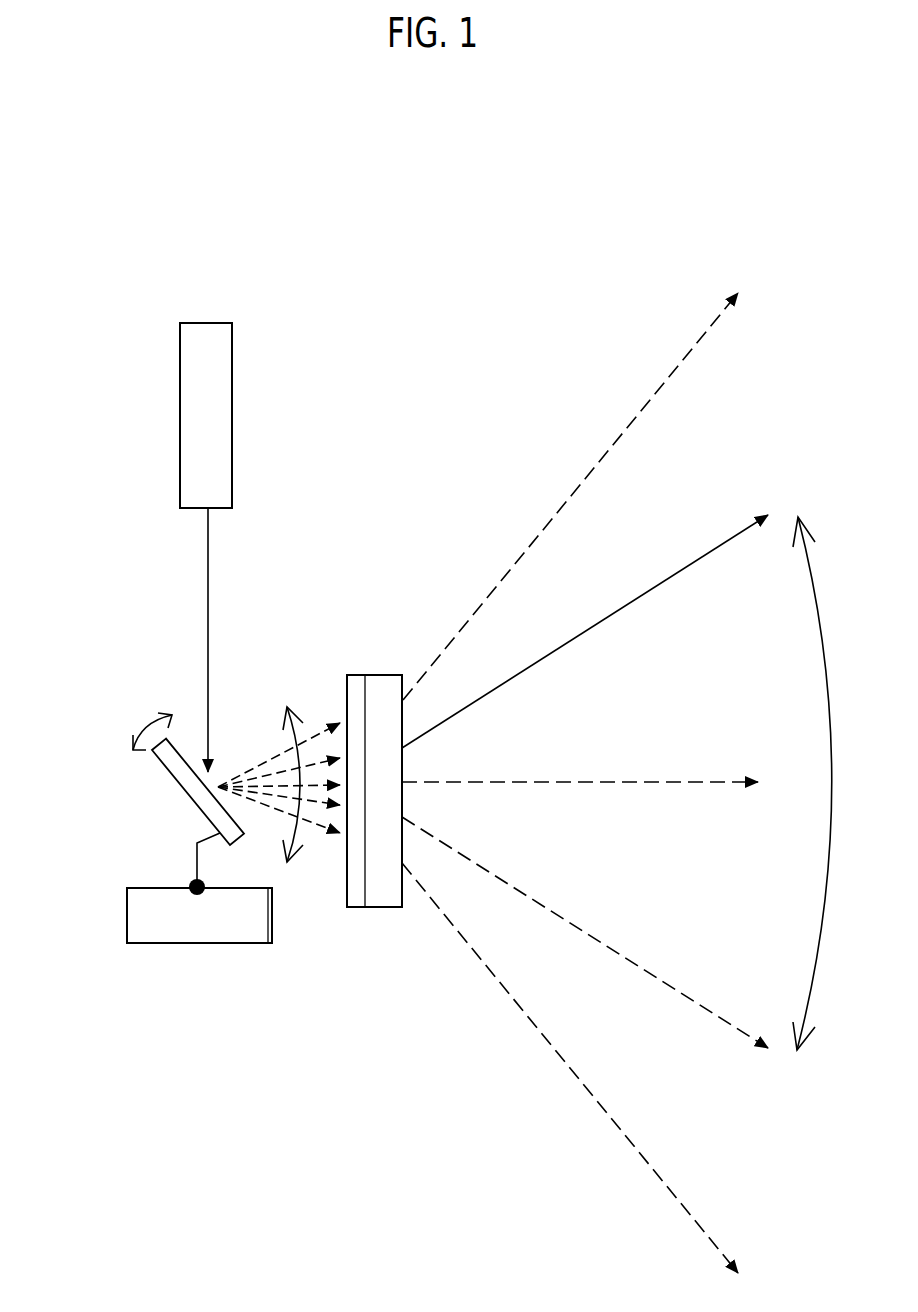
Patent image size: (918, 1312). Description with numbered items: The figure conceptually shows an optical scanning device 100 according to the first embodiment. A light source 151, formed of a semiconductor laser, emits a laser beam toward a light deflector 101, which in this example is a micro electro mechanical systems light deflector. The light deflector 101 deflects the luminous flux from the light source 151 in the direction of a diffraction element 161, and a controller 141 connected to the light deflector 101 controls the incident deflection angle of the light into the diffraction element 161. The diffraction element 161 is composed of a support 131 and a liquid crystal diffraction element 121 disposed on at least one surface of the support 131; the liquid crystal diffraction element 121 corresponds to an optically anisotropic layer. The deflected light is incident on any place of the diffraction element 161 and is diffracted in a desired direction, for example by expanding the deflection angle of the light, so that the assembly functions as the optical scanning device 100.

The optical scanning device 100 is at (456, 269).
The light deflector 101 is at (125, 752).
The liquid crystal diffraction element 121 is at (377, 907).
The support 131 is at (353, 900).
The controller 141 is at (130, 913).
The light source 151 is at (202, 445).
The diffraction element 161 is at (403, 723).